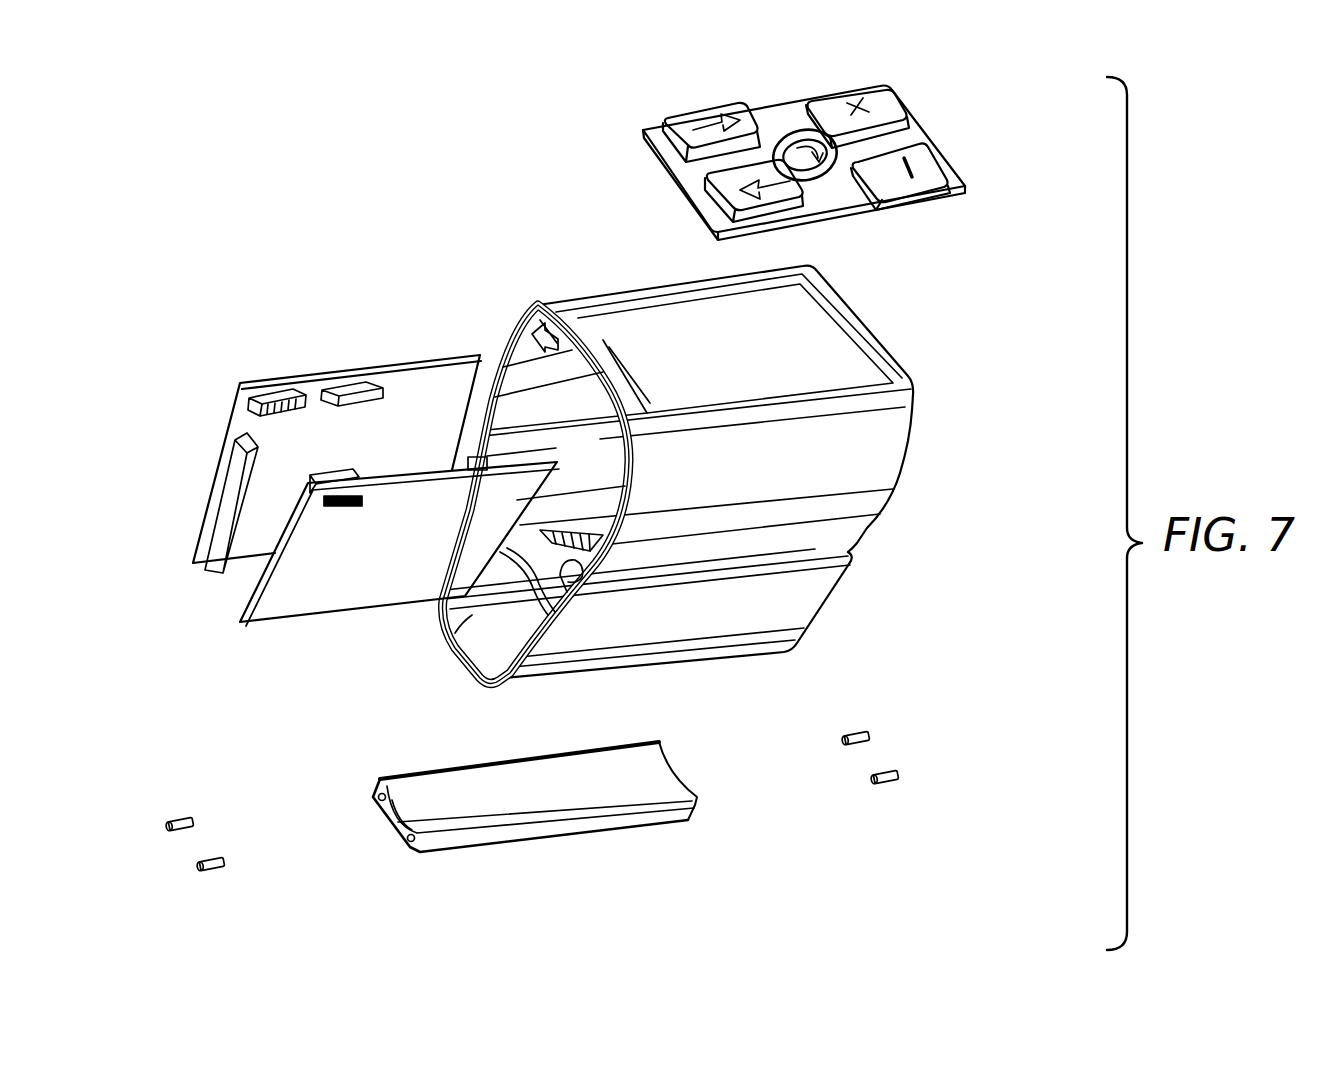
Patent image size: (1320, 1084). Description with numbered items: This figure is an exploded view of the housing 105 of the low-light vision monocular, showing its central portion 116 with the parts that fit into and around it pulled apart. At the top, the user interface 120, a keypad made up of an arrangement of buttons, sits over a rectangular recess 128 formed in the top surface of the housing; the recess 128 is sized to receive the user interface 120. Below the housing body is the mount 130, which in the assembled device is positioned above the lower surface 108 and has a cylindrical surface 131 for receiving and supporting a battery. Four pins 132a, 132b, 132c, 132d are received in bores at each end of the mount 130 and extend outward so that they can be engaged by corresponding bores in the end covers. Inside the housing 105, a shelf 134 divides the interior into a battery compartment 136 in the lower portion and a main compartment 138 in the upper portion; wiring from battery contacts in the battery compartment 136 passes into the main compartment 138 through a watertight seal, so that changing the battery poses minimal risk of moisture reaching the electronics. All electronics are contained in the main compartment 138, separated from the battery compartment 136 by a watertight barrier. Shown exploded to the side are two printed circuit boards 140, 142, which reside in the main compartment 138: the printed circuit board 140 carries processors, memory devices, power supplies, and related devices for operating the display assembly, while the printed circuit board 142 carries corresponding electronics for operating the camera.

The housing 105 is at (914, 304).
The lower surface 108 is at (494, 641).
The central portion 116 is at (906, 455).
The user interface 120 is at (967, 203).
The rectangular recess 128 is at (852, 378).
The mount 130 is at (552, 794).
The cylindrical surface 131 is at (643, 777).
The pin 132a is at (165, 823).
The pin 132b is at (197, 864).
The pin 132c is at (873, 738).
The pin 132d is at (905, 773).
The shelf 134 is at (512, 633).
The battery compartment 136 is at (512, 636).
The main compartment 138 is at (528, 380).
The printed circuit board 140 is at (227, 448).
The printed circuit board 142 is at (228, 603).